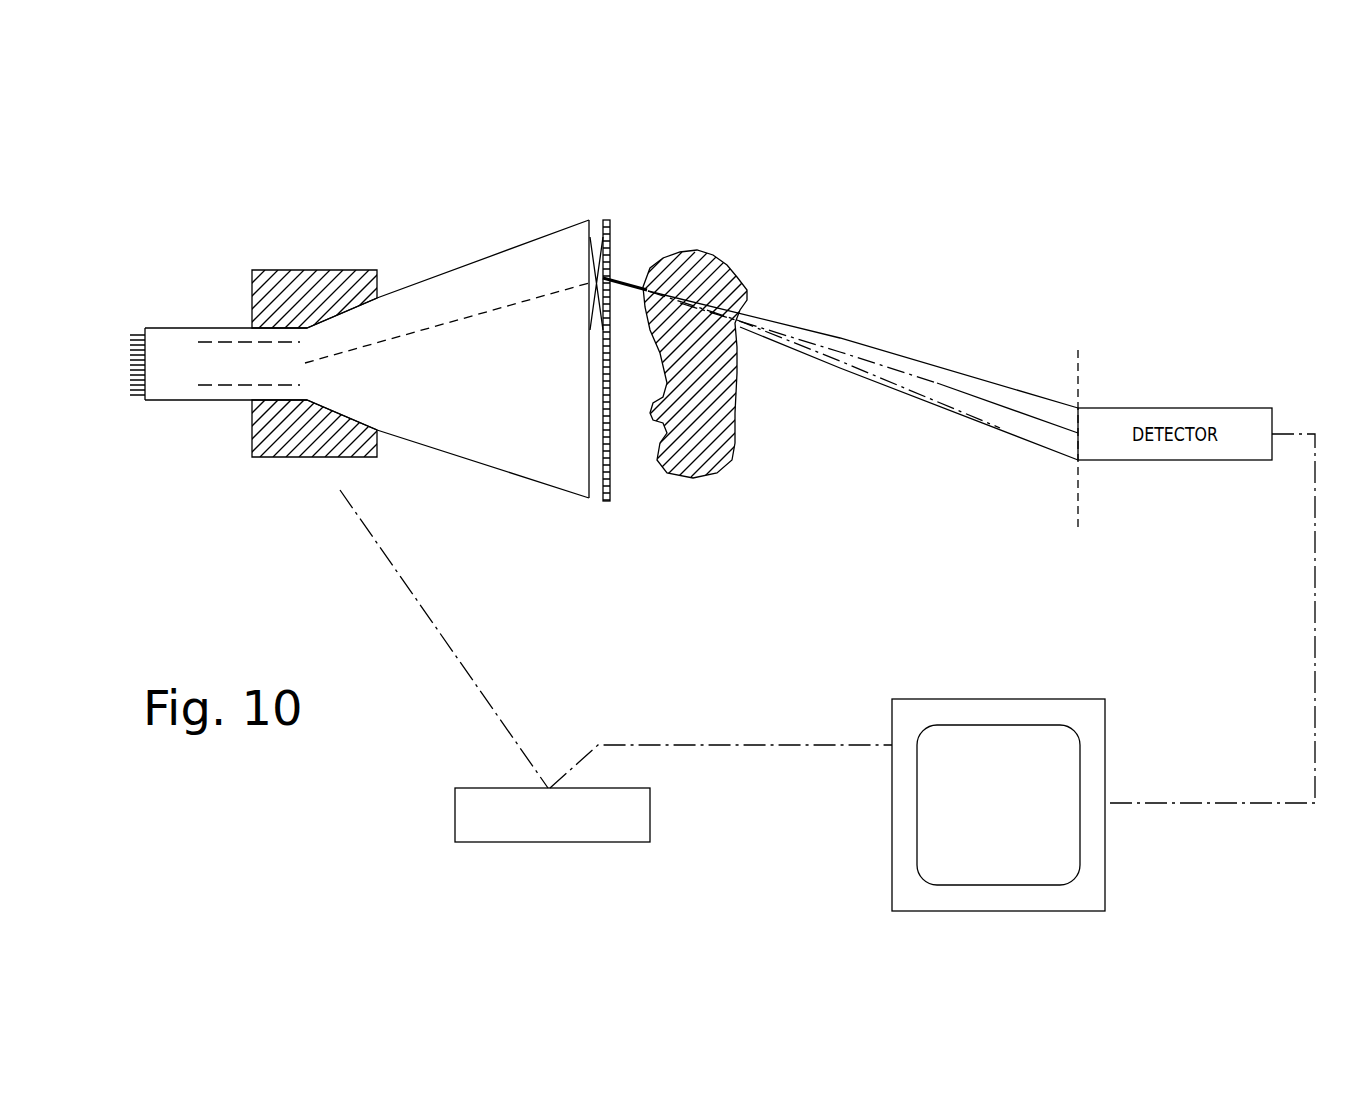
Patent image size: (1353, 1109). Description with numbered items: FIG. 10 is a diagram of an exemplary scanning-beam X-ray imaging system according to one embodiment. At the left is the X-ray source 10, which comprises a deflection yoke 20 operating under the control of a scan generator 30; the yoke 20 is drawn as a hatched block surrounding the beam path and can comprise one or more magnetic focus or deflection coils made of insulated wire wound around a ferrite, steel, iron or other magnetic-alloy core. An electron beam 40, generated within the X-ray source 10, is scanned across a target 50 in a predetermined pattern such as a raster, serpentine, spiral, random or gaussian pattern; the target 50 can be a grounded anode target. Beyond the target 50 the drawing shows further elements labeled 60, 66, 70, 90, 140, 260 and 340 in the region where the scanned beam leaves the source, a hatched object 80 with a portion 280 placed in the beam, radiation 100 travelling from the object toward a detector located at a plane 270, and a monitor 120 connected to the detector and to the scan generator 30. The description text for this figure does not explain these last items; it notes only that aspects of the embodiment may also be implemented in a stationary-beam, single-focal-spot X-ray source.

The X-ray source 10 is at (198, 290).
The deflection yoke 20 is at (300, 270).
The scan generator 30 is at (483, 788).
The electron beam 40 is at (425, 330).
The target 50 is at (589, 366).
The aperture / lens 60 is at (589, 278).
The lower edge 66 is at (586, 497).
The pencil beam 70 is at (598, 212).
The object under inspection 80 is at (728, 259).
The gap 90 is at (606, 504).
The transmitted radiation 100 is at (880, 357).
The monitor 120 is at (992, 699).
The collimator plate 140 is at (612, 500).
The segmented detector array plate 260 is at (612, 240).
The detector plane 270 is at (1076, 356).
The object portion 280 is at (736, 456).
The scan region 340 is at (550, 437).